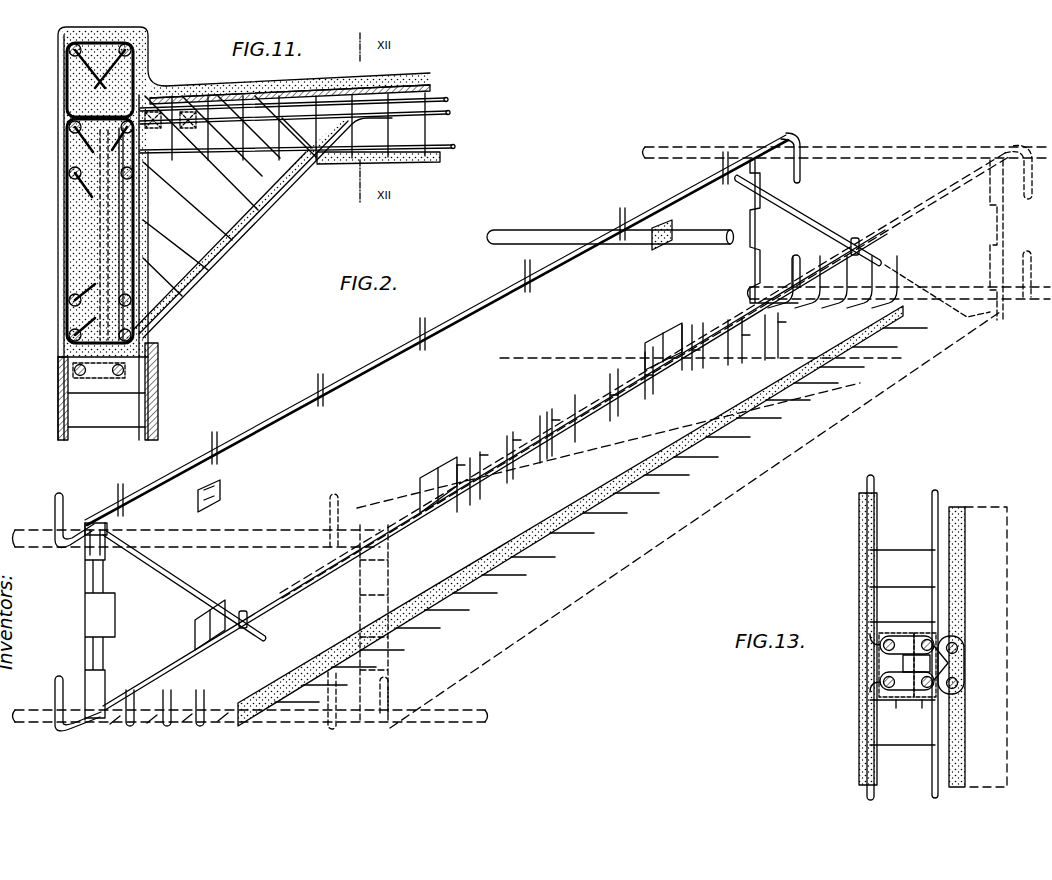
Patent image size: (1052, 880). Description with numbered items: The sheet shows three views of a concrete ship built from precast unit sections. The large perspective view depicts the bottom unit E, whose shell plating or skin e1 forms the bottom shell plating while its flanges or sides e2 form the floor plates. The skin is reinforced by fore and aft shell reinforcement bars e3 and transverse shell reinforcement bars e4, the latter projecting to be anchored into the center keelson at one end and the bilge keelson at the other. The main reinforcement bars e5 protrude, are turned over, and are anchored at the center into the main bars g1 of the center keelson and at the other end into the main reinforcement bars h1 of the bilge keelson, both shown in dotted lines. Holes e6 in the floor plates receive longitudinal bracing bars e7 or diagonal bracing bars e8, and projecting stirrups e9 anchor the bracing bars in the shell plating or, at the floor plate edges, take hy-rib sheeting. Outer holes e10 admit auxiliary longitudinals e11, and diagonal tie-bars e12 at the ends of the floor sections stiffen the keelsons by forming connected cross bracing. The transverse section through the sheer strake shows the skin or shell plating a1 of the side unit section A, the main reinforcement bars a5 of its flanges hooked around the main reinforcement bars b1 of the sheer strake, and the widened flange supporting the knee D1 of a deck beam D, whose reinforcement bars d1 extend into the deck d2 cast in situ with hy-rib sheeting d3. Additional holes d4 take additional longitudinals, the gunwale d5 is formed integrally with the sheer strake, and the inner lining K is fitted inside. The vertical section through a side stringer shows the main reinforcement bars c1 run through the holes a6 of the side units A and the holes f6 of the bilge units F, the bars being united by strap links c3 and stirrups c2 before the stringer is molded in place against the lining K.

In FIG. 11, the skin or shell plating a1 is at (62, 402).
In FIG. 13, the skin or shell plating a1 is at (860, 532).
In FIG. 11, the main reinforcement bars of the flanges a5 is at (140, 79).
In FIG. 13, the main reinforcement bars of the flanges a5 is at (874, 481).
In FIG. 13, the holes a6 is at (888, 634).
In FIG. 11, the main reinforcement bars of the sheer strake b1 is at (67, 47).
In FIG. 13, the main reinforcement bars of the side stringer c1 is at (880, 645).
In FIG. 13, the stirrups c2 is at (965, 663).
In FIG. 13, the strap links c3 is at (884, 689).
In FIG. 11, the reinforcement bars of the deck beams d1 is at (448, 100).
In FIG. 11, the deck d2 is at (430, 76).
In FIG. 11, the hy-rib sheeting d3 is at (358, 80).
In FIG. 11, the additional holes d4 is at (186, 132).
In FIG. 11, the gunwale d5 is at (100, 55).
In FIG. 11, the deck beams D is at (292, 118).
In FIG. 11, the knees of the deck beams D1 is at (263, 228).
In FIG. 11, the inner lining K is at (158, 392).
In FIG. 13, the inner lining K is at (1008, 689).
In FIG. 13, the unit section A is at (902, 586).
In FIG. 13, the bilge units F is at (902, 737).
In FIG. 13, the holes f6 is at (898, 708).
In FIG. 2, the shell plating or skin e1 is at (495, 470).
In FIG. 2, the flanges or sides e2 is at (667, 201).
In FIG. 2, the fore and aft shell reinforcement bars e3 is at (622, 494).
In FIG. 2, the transverse shell reinforcement bars e4 is at (200, 697).
In FIG. 2, the main reinforcement bars e5 is at (53, 496).
In FIG. 2, the holes in the floor plates e6 is at (195, 628).
In FIG. 2, the longitudinal bracing bars e7 is at (708, 362).
In FIG. 2, the diagonal bracing bars e8 is at (504, 479).
In FIG. 2, the projecting stirrups e9 is at (610, 434).
In FIG. 2, the outer holes e10 is at (221, 493).
In FIG. 2, the auxiliary longitudinals e11 is at (710, 232).
In FIG. 2, the diagonal tie-bars e12 is at (242, 612).
In FIG. 2, the unit E is at (597, 447).
In FIG. 2, the main bars of the center keelson g1 is at (33, 546).
In FIG. 2, the main reinforcement bars of the bilge keelson h1 is at (886, 155).